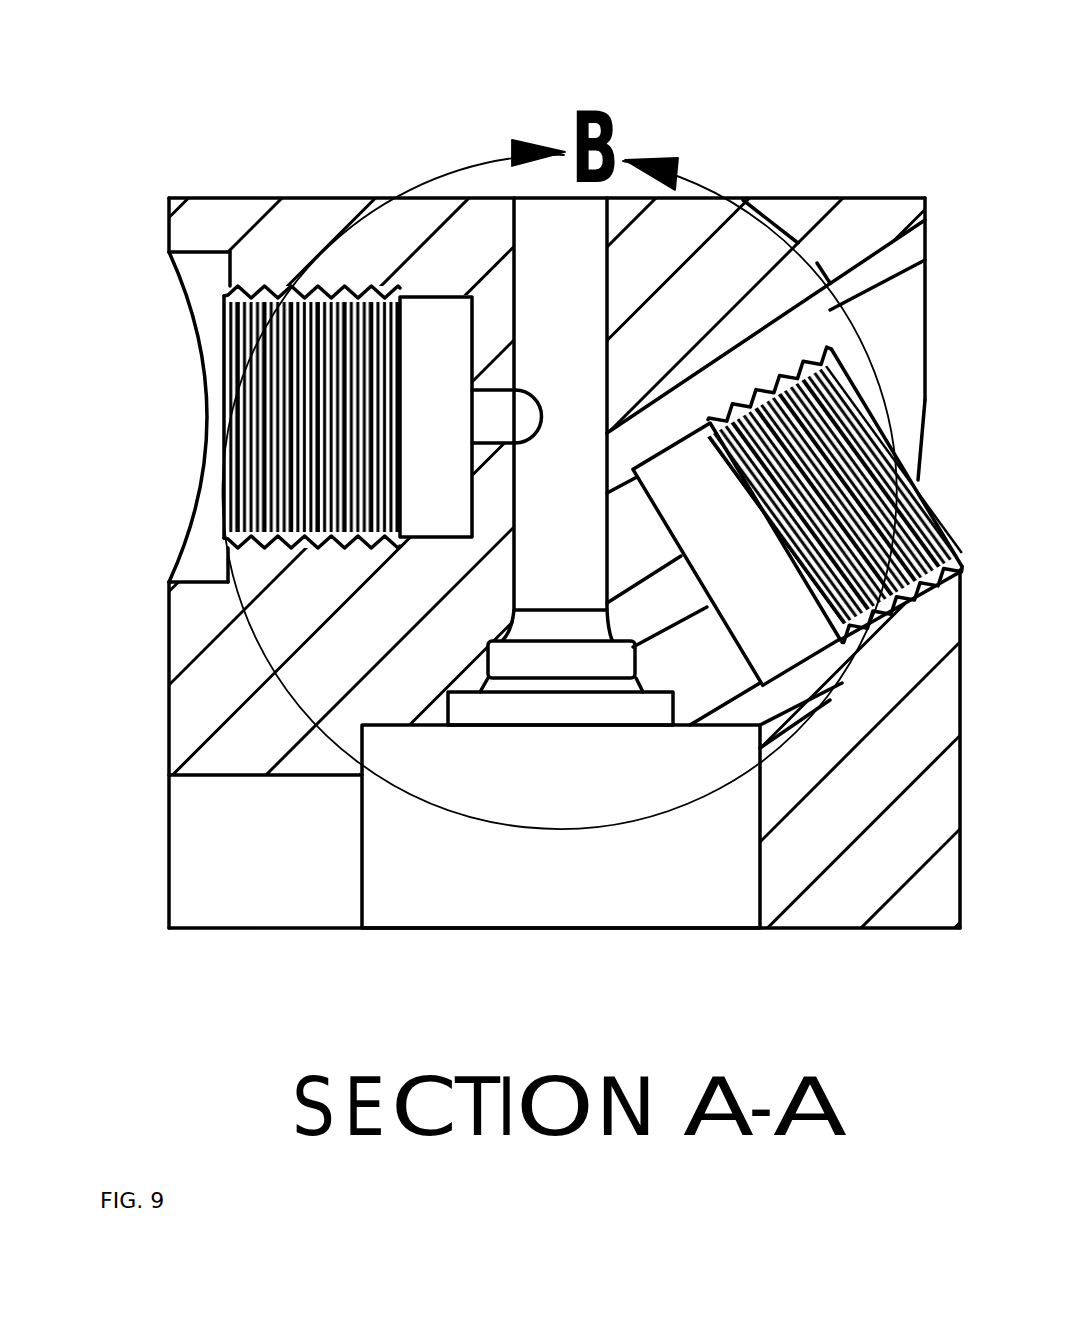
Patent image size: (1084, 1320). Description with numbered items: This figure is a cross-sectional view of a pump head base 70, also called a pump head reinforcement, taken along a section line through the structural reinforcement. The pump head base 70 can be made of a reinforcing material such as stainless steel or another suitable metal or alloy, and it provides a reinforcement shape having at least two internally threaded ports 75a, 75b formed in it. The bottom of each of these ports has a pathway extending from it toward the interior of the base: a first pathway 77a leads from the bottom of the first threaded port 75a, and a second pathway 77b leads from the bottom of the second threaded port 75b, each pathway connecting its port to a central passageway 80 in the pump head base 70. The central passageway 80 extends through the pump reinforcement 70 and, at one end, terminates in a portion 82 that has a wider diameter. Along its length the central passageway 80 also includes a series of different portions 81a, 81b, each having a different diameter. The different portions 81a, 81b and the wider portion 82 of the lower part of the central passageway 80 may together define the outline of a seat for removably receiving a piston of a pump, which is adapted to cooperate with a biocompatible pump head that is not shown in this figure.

The pump head base 70 is at (126, 116).
The internally threaded port 75a is at (437, 320).
The internally threaded port 75b is at (775, 636).
The pathway 77a is at (489, 407).
The pathway 77b is at (658, 612).
The central passageway 80 is at (577, 533).
The portion of the central passageway 81a is at (507, 658).
The portion of the central passageway 81b is at (463, 712).
The portion with a wider diameter 82 is at (468, 888).